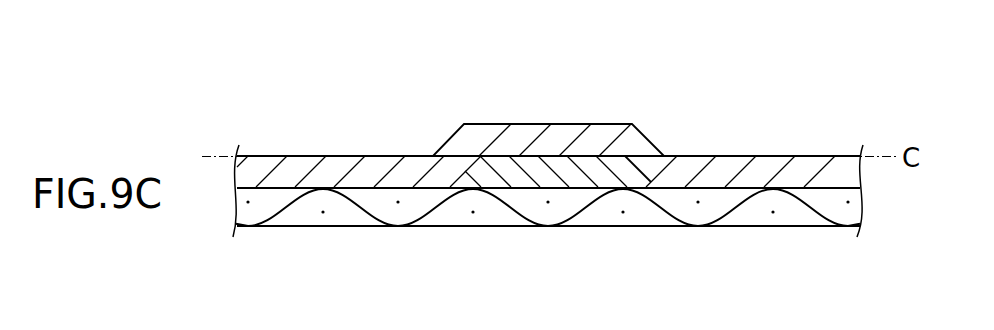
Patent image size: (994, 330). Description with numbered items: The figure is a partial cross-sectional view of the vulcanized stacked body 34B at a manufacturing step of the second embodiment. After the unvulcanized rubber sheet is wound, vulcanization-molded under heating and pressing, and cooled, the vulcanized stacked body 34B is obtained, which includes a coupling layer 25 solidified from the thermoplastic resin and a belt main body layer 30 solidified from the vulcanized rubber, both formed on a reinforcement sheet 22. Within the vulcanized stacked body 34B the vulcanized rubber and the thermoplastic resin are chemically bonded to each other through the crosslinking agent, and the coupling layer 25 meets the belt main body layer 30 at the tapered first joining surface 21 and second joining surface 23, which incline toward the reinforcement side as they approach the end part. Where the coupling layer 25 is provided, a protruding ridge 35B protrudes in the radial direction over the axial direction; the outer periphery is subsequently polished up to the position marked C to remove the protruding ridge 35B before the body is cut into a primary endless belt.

The belt main body layer 30 is at (335, 173).
The reinforcement sheet 22 is at (757, 212).
The first joining surface 21 is at (463, 162).
The coupling layer 25 is at (551, 175).
The second joining surface 23 is at (633, 167).
The vulcanized stacked body 34B is at (727, 104).
The protruding ridge 35B is at (597, 104).